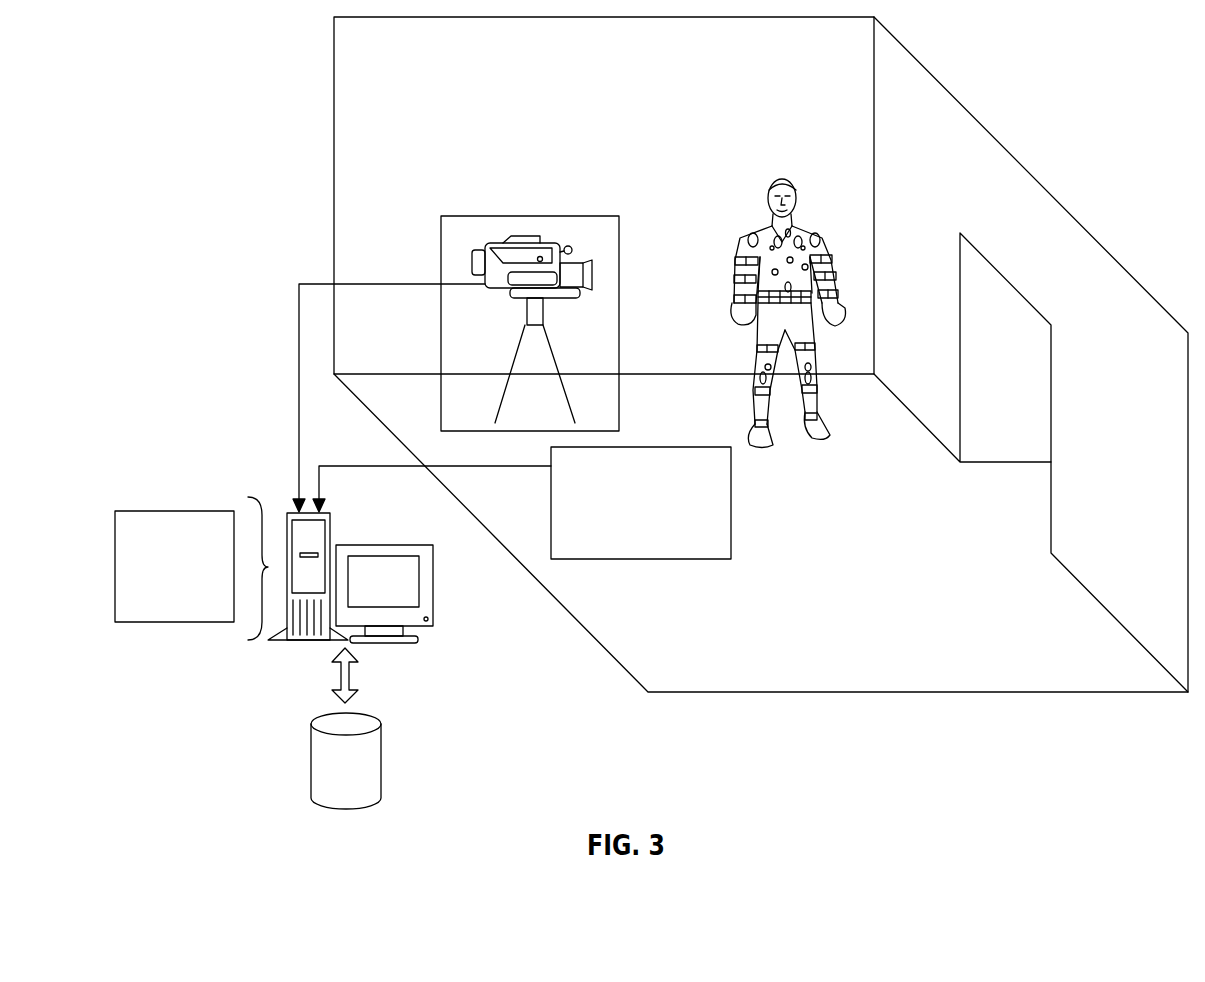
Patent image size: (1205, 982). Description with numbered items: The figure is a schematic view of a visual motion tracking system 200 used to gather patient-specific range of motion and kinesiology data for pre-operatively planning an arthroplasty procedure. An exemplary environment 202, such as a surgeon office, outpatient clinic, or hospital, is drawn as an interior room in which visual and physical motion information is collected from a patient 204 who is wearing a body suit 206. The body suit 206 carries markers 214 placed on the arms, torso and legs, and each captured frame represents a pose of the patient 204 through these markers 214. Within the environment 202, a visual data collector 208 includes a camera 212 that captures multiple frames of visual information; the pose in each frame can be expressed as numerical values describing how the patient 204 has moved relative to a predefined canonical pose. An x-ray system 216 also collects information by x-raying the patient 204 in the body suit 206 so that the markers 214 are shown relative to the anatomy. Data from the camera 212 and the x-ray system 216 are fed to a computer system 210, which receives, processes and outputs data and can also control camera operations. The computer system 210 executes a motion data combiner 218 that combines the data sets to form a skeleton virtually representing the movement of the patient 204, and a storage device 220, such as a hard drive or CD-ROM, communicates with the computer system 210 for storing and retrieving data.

The visual motion tracking system 200 is at (257, 492).
The environment 202 is at (962, 83).
The patient 204 is at (796, 290).
The body suit 206 is at (796, 316).
The visual data collector 208 is at (619, 215).
The computer system 210 is at (331, 533).
The camera 212 is at (567, 298).
The markers 214 is at (737, 305).
The x-ray system 216 is at (731, 502).
The motion data combiner 218 is at (173, 510).
The storage device 220 is at (382, 761).